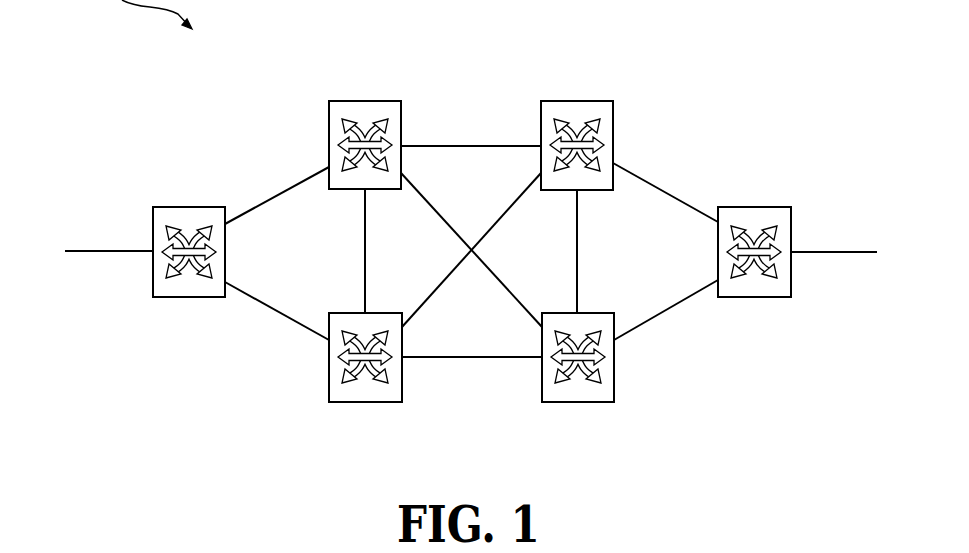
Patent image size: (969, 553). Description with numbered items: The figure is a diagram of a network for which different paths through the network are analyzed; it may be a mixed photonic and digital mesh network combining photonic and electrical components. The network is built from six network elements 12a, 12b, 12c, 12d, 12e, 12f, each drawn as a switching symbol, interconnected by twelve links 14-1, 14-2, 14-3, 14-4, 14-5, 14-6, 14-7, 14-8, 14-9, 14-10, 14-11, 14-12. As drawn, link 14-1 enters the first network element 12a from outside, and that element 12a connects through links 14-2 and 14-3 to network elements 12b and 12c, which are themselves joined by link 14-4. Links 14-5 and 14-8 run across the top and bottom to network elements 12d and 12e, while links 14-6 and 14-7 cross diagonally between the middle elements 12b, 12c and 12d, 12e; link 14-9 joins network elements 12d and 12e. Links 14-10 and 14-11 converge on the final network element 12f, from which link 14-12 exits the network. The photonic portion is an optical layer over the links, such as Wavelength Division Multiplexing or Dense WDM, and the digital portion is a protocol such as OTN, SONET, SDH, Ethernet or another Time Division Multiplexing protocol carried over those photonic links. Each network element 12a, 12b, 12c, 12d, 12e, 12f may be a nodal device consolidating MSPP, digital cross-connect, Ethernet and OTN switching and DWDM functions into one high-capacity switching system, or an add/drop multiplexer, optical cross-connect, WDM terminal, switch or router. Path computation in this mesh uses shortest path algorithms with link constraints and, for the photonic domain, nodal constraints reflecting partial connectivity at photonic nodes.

The network element 12a is at (188, 206).
The network element 12b is at (366, 100).
The network element 12c is at (365, 403).
The network element 12d is at (577, 100).
The network element 12e is at (578, 403).
The network element 12f is at (753, 298).
The link 14-1 is at (100, 251).
The link 14-2 is at (272, 197).
The link 14-3 is at (262, 304).
The link 14-4 is at (364, 247).
The link 14-5 is at (478, 145).
The link 14-6 is at (518, 198).
The link 14-7 is at (480, 270).
The link 14-8 is at (468, 358).
The link 14-9 is at (579, 247).
The link 14-10 is at (655, 183).
The link 14-11 is at (663, 313).
The link 14-12 is at (834, 252).